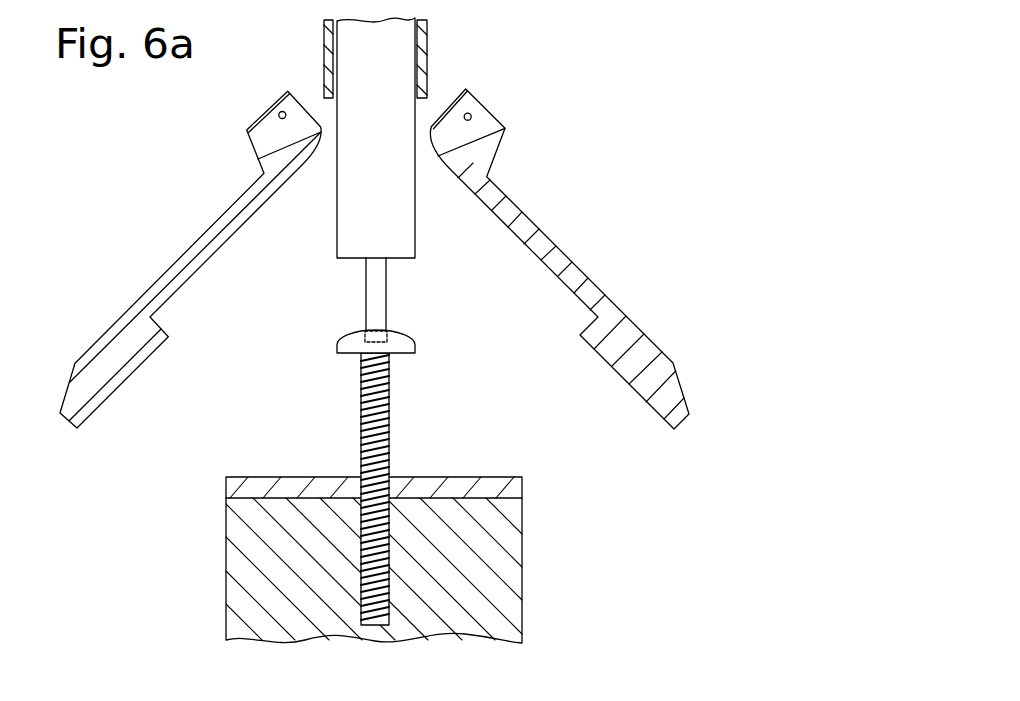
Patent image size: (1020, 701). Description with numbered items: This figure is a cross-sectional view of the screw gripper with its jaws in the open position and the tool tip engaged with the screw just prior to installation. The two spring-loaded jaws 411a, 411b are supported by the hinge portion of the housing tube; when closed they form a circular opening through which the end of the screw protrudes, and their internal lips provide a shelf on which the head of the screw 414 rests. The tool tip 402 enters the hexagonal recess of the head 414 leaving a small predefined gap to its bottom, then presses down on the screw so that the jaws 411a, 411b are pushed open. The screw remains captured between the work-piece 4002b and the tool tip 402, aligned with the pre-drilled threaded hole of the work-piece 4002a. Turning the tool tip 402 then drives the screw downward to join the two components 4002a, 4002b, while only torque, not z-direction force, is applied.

The jaw 411a is at (131, 331).
The jaw 411b is at (629, 334).
The tool tip 402 is at (378, 296).
The head of the screw 414 is at (349, 338).
The work-piece 4002a is at (515, 576).
The work-piece 4002b is at (517, 490).